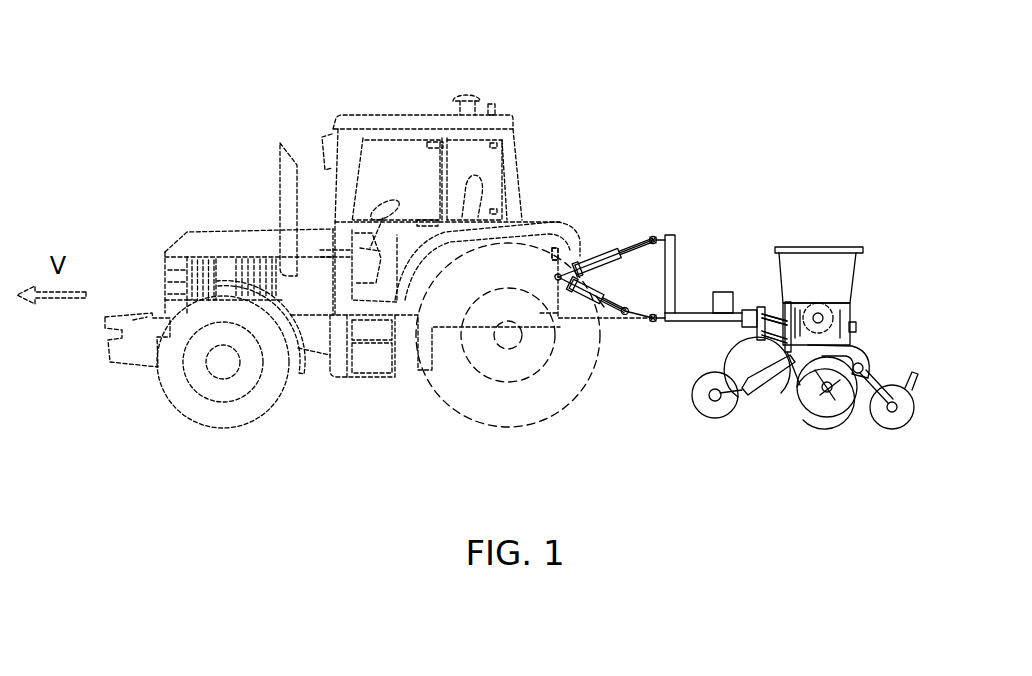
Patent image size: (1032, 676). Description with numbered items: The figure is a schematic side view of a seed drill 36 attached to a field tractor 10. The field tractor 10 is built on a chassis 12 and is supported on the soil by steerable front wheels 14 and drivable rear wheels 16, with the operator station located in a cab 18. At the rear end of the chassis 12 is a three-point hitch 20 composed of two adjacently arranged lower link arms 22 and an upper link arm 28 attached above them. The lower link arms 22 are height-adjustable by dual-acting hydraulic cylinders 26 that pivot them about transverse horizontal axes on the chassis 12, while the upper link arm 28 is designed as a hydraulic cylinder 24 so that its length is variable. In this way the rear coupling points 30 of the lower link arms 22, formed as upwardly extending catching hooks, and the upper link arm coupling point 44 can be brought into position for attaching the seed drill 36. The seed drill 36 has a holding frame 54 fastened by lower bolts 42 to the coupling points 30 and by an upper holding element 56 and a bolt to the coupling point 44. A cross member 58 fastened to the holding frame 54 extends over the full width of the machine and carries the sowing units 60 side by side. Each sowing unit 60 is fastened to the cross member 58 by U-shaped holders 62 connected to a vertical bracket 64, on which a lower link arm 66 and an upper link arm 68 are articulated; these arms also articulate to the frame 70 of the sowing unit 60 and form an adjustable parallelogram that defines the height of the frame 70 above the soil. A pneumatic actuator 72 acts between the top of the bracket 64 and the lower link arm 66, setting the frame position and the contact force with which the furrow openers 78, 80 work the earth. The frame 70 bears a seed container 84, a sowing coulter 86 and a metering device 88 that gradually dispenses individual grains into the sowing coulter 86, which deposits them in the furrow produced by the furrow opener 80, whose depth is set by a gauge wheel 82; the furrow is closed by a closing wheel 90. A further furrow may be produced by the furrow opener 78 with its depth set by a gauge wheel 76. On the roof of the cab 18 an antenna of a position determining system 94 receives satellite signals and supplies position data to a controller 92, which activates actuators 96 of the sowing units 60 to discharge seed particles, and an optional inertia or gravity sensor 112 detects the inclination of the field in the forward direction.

The field tractor 10 is at (303, 122).
The chassis 12 is at (392, 357).
The front wheels 14 is at (200, 405).
The rear wheels 16 is at (475, 407).
The cab 18 is at (378, 150).
The three-point hitch 20 is at (602, 397).
The lower link arms 22 is at (625, 323).
The hydraulic cylinder 24 is at (602, 250).
The dual-acting hydraulic cylinders 26 is at (601, 303).
The upper link arm 28 is at (553, 253).
The rear coupling points 30 is at (652, 321).
The seed drill 36 is at (773, 132).
The lower bolts 42 is at (653, 321).
The upper link arm coupling point 44 is at (653, 238).
The holding frame 54 is at (690, 319).
The upper holding element 56 is at (667, 237).
The cross member 58 is at (690, 314).
The sowing unit 60 is at (898, 210).
The U-shaped holders 62 is at (751, 309).
The bracket 64 is at (766, 305).
The lower link arm 66 is at (778, 333).
The upper link arm 68 is at (790, 305).
The frame 70 is at (877, 350).
The pneumatic actuator 72 is at (771, 305).
The gauge wheel 76 is at (700, 400).
The furrow opener 78 is at (746, 412).
The furrow opener 80 is at (797, 412).
The gauge wheel 82 is at (842, 407).
The seed container 84 is at (818, 268).
The sowing coulter 86 is at (824, 418).
The metering device 88 is at (832, 311).
The closing wheel 90 is at (905, 428).
The controller 92 is at (720, 292).
The position determining system 94 is at (472, 95).
The actuators 96 is at (856, 327).
The inertia or gravity sensor 112 is at (495, 108).